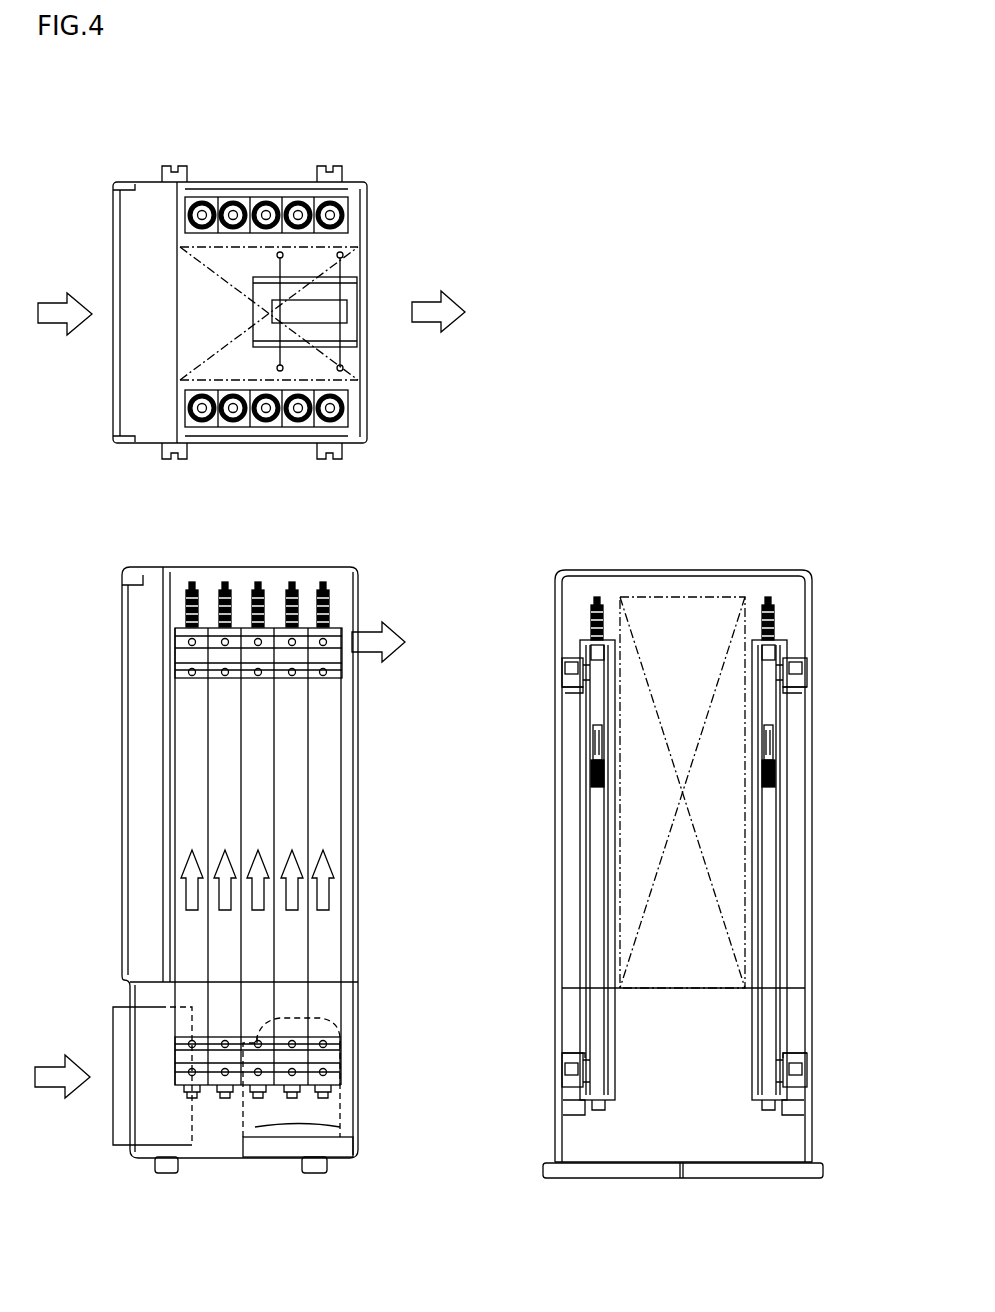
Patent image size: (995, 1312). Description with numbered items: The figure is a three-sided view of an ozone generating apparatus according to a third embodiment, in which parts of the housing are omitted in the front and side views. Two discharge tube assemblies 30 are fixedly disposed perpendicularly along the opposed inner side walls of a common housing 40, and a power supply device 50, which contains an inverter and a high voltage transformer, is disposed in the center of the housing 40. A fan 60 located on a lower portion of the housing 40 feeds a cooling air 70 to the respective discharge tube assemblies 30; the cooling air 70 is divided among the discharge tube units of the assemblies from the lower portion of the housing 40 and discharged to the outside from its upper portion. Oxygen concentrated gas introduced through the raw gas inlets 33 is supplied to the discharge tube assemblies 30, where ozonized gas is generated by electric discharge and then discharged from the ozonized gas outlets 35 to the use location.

The discharge tube assembly 30 is at (347, 227).
The raw gas inlet 33 is at (562, 687).
The ozonized gas outlet 35 is at (558, 1053).
The housing 40 is at (247, 181).
The power supply device 50 is at (350, 265).
The fan 60 is at (118, 1027).
The cooling air 70 is at (48, 303).